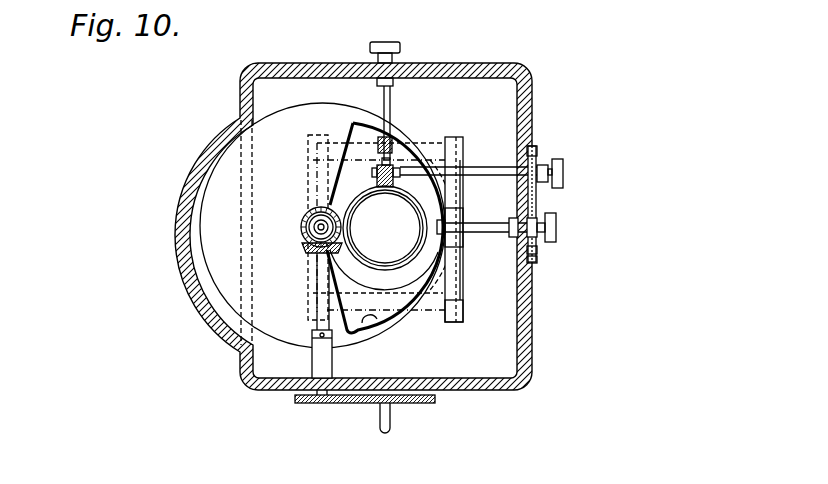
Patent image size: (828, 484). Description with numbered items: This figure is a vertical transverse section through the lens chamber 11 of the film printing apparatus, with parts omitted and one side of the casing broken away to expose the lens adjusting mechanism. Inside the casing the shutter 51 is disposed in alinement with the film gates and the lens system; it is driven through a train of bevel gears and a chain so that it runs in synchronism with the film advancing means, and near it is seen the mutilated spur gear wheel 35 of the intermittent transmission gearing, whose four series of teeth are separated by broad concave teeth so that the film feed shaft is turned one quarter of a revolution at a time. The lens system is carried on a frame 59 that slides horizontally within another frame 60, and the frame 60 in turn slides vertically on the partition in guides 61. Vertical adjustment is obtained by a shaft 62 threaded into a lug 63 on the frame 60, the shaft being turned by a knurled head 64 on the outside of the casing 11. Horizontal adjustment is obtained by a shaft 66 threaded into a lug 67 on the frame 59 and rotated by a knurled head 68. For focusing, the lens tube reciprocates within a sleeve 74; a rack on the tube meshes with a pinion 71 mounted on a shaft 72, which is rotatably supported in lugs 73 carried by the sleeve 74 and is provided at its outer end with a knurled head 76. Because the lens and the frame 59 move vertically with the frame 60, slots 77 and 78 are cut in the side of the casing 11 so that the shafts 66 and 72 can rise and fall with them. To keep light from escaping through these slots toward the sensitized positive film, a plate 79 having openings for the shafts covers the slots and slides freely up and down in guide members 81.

The lens chamber 11 is at (533, 85).
The mutilated spur gear wheel 35 is at (305, 248).
The shutter 51 is at (377, 318).
The frame 59 is at (458, 300).
The frame 60 is at (446, 142).
The guides 61 is at (459, 277).
The shaft 62 is at (390, 100).
The lug 63 is at (392, 147).
The knurled head 64 is at (400, 47).
The shaft 66 is at (487, 224).
The lug 67 is at (455, 247).
The knurled head 68 is at (556, 227).
The pinion 71 is at (352, 122).
The shaft 72 is at (487, 175).
The lugs 73 is at (378, 172).
The sleeve 74 is at (330, 272).
The knurled head 76 is at (563, 173).
The slot 77 is at (537, 155).
The slot 78 is at (532, 262).
The plate 79 is at (536, 204).
The guide members 81 is at (535, 253).